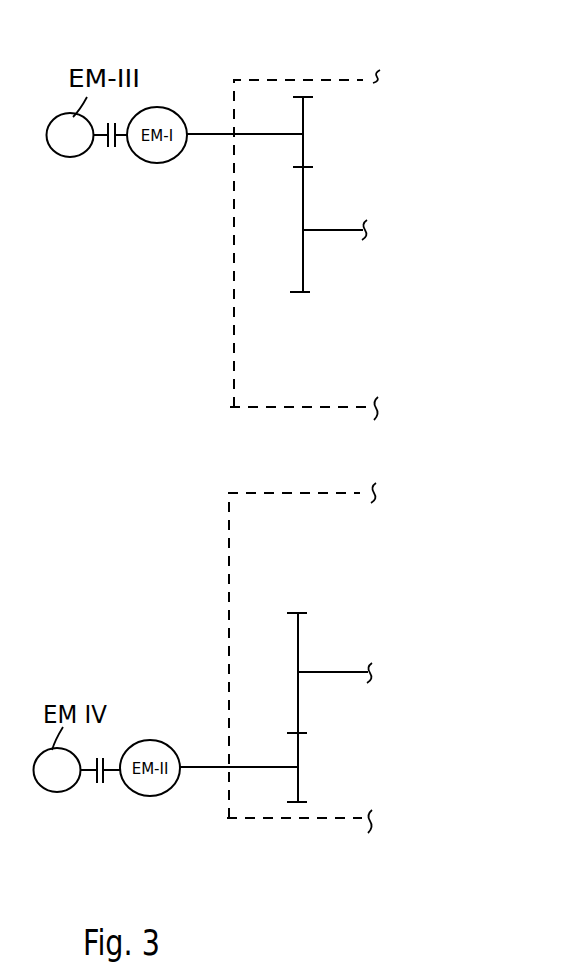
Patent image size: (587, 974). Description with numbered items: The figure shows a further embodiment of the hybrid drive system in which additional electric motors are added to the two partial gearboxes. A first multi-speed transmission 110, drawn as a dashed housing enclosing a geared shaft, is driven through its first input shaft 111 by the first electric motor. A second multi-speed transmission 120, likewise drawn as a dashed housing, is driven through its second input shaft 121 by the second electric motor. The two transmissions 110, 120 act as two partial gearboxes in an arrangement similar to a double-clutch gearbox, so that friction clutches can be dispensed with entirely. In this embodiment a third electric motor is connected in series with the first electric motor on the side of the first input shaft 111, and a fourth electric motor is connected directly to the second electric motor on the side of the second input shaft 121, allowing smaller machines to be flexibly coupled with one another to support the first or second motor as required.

The first multi-speed transmission 110 is at (357, 80).
The first input shaft 111 is at (210, 128).
The second multi-speed transmission 120 is at (333, 493).
The second input shaft 121 is at (203, 763).